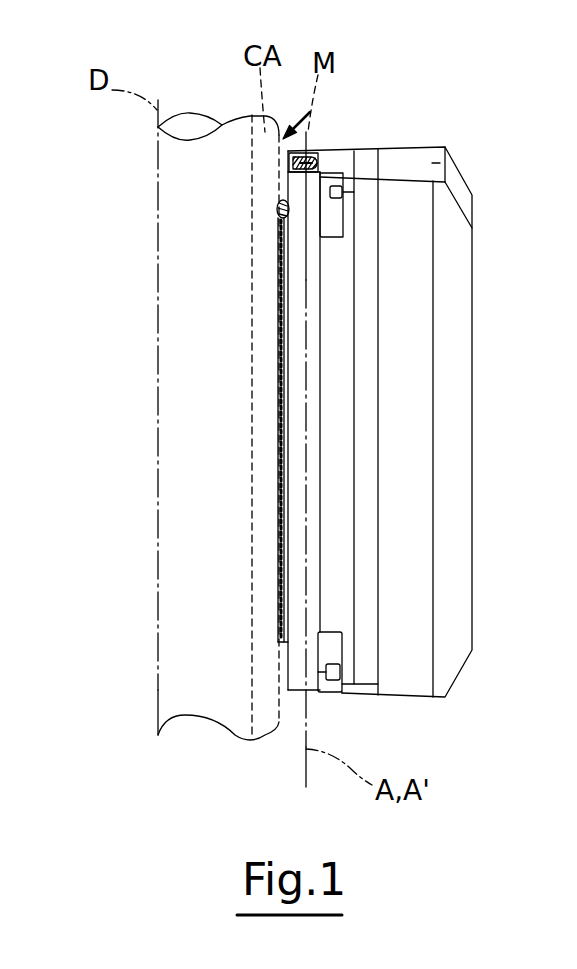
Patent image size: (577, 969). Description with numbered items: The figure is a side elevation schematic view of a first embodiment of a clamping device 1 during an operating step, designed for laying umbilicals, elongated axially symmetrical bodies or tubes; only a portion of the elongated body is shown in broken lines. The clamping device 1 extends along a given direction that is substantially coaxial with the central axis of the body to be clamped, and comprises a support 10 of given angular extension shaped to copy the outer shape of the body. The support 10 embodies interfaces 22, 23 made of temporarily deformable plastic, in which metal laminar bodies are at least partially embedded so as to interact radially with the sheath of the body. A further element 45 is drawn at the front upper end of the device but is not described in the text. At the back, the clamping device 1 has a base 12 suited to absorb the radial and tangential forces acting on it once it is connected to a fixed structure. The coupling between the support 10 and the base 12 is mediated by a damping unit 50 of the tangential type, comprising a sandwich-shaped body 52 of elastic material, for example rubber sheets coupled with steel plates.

The clamping device 1 is at (453, 71).
The support 10 is at (342, 615).
The base 12 is at (470, 388).
The interface 22 is at (280, 203).
The interface 23 is at (286, 424).
The locking member 45 is at (300, 150).
The damping unit 50 is at (378, 200).
The sandwich-shaped body 52 is at (372, 270).